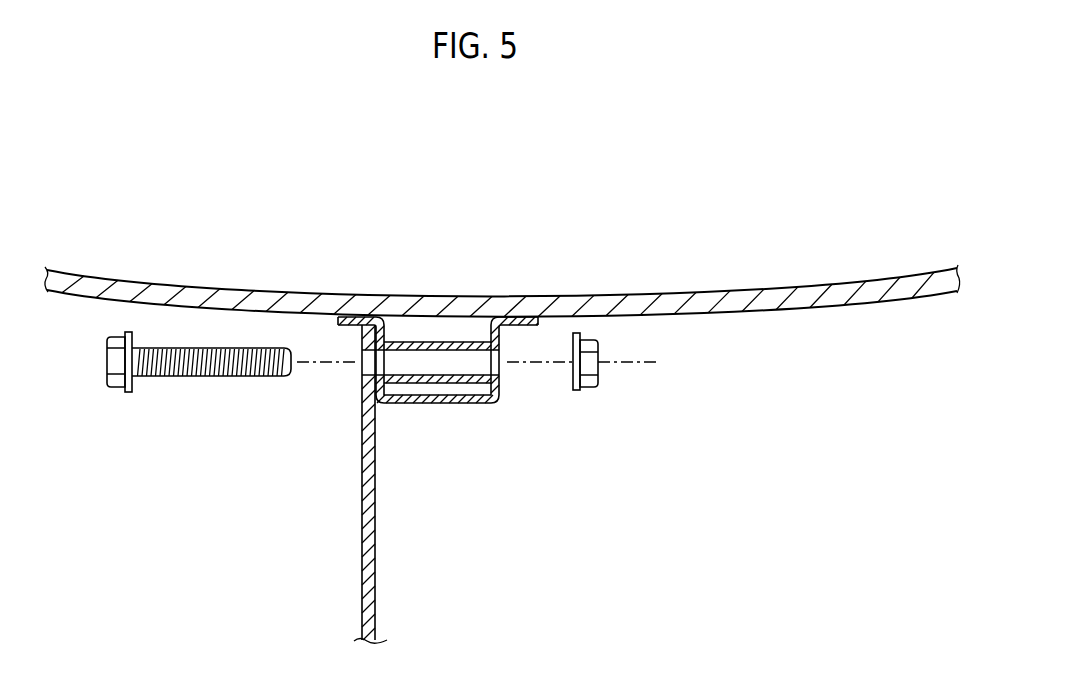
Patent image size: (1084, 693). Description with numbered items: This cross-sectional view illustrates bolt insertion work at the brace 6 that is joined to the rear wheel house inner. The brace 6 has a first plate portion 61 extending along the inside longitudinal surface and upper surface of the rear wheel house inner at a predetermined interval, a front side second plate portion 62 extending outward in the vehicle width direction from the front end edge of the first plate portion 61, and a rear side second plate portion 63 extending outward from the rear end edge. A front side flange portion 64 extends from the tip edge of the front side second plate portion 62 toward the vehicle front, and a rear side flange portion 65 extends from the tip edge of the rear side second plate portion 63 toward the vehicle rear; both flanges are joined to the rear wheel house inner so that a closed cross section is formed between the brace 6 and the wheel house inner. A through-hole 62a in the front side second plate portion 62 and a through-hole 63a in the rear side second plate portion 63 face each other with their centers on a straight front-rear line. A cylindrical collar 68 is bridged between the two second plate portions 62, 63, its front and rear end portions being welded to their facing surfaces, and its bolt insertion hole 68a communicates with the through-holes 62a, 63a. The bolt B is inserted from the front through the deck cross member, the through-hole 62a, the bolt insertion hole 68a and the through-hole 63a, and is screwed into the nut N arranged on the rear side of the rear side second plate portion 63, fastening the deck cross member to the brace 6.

The brace 6 is at (431, 376).
The first plate portion 61 is at (468, 405).
The front side second plate portion 62 is at (349, 338).
The through-hole 62a is at (382, 363).
The rear side second plate portion 63 is at (527, 334).
The through-hole 63a is at (493, 363).
The front side flange portion 64 is at (362, 323).
The rear side flange portion 65 is at (520, 322).
The collar 68 is at (437, 430).
The bolt insertion hole 68a is at (433, 518).
The bolt B is at (116, 360).
The nut N is at (591, 367).